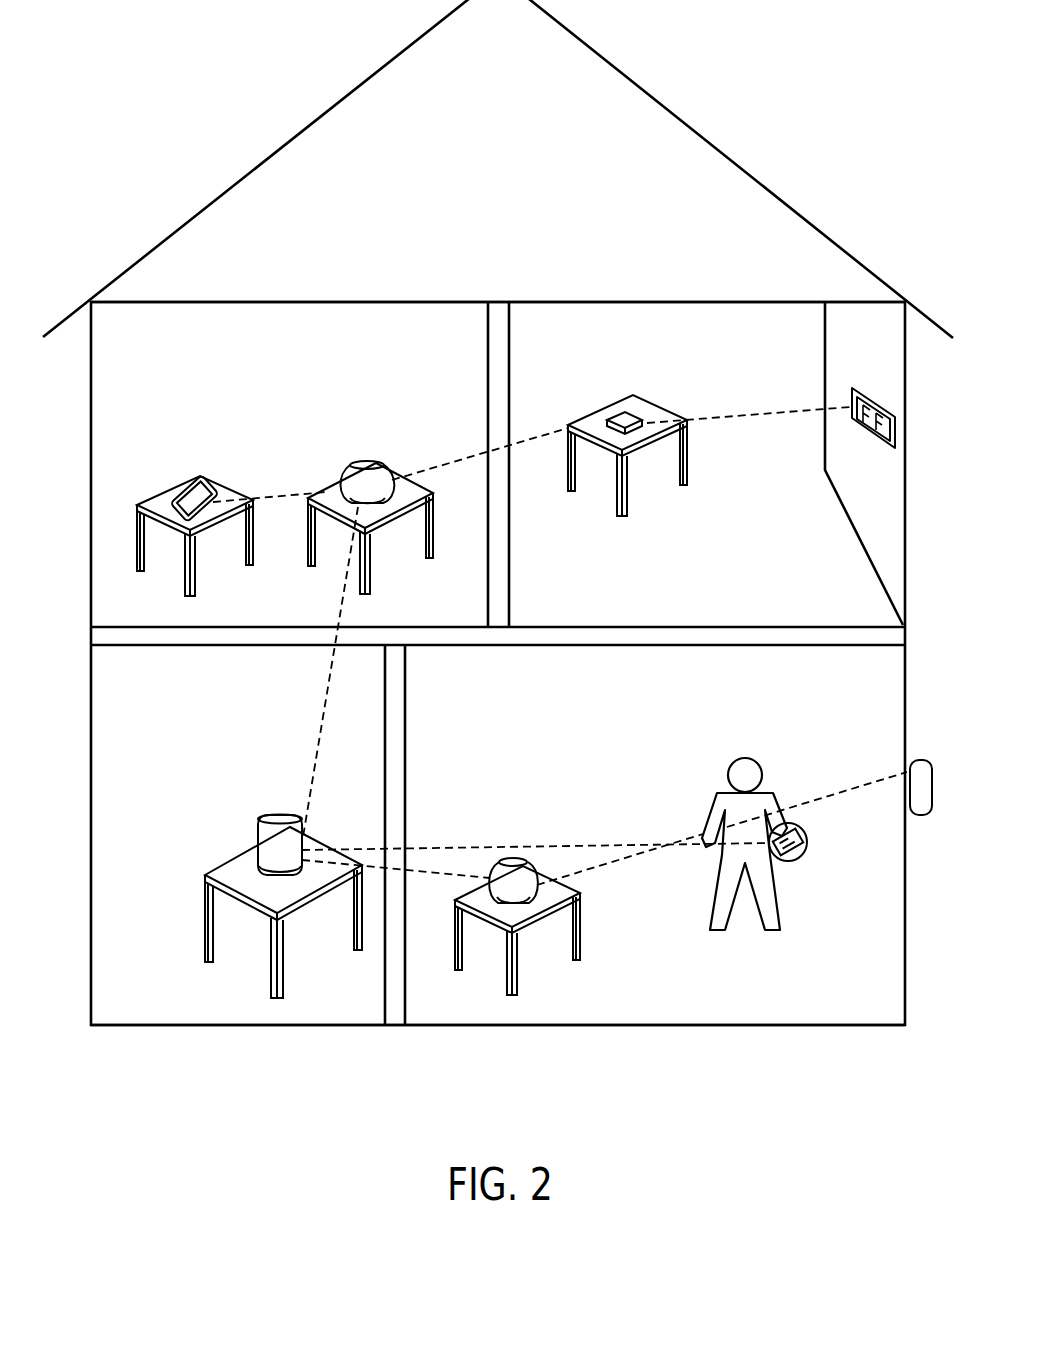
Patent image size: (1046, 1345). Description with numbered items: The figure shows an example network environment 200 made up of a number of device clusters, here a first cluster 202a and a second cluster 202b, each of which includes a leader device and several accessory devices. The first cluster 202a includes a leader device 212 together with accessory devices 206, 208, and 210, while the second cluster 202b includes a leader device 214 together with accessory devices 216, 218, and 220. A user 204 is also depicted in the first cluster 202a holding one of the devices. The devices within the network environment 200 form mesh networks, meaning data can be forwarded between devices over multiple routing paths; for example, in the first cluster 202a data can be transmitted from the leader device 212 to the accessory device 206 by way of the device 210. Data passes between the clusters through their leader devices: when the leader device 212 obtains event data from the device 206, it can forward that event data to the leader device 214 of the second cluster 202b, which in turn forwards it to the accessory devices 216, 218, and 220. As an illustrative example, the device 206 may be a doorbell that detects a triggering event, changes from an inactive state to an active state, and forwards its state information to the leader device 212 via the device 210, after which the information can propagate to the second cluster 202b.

The network environment 200 is at (843, 47).
The first cluster 202a is at (510, 671).
The second cluster 202b is at (515, 299).
The user 204 is at (749, 749).
The accessory device 206 is at (913, 762).
The accessory device 208 is at (807, 830).
The accessory device 210 is at (508, 860).
The leader device 212 is at (268, 817).
The leader device 214 is at (350, 465).
The accessory device 216 is at (180, 493).
The accessory device 218 is at (645, 420).
The accessory device 220 is at (866, 390).